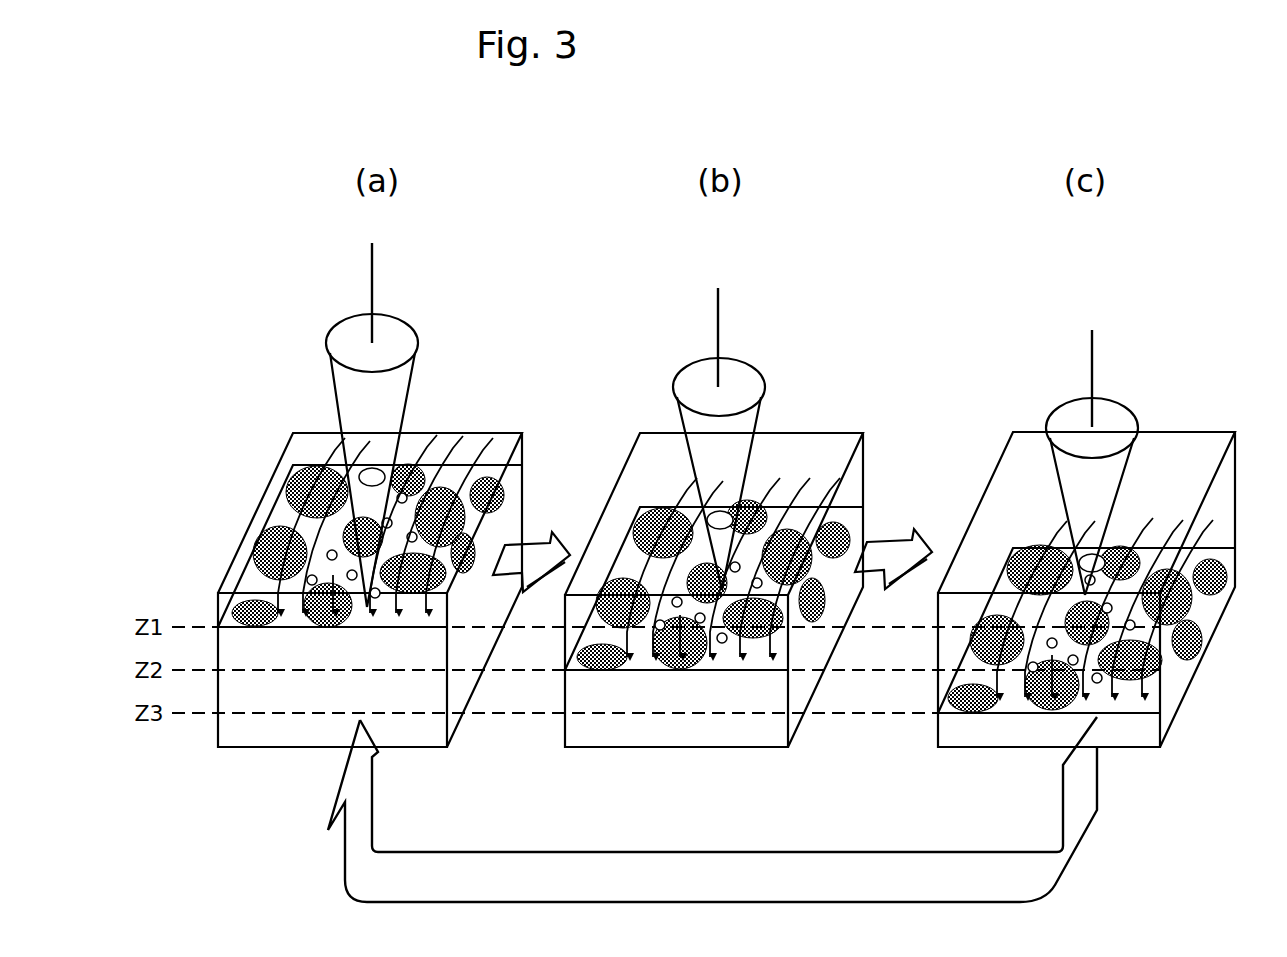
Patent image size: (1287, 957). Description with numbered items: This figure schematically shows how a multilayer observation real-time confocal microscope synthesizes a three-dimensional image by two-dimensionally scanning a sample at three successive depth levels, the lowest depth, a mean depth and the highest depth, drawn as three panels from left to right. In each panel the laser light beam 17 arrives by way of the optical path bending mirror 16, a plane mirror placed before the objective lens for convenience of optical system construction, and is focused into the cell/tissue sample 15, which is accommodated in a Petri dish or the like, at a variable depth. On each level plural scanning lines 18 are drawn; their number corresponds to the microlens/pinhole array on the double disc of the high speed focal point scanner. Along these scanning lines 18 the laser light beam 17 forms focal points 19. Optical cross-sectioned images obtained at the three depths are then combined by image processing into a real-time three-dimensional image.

The cell/tissue sample 15 is at (265, 748).
The optical path bending mirror 16 is at (363, 275).
The laser light beam 17 is at (330, 379).
The scanning lines 18 is at (290, 467).
The focal points 19 is at (263, 543).